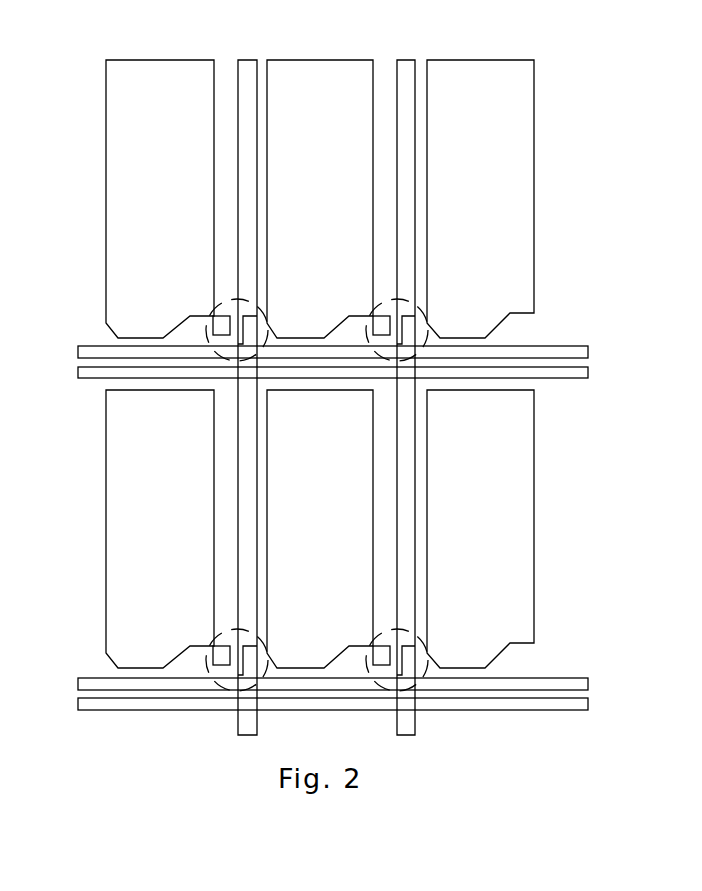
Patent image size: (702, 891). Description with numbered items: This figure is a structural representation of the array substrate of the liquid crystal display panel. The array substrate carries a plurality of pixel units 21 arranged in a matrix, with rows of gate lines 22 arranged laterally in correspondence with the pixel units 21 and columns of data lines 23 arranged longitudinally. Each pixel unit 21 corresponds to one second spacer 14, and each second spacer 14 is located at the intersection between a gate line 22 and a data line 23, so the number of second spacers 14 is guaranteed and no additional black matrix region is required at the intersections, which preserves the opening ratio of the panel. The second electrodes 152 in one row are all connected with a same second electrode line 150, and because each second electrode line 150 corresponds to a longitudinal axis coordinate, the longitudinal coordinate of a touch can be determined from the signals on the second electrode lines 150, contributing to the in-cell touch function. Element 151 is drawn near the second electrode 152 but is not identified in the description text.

The second spacer 14 is at (423, 318).
The pixel unit 21 is at (133, 180).
The gate line 22 is at (108, 372).
The data line 23 is at (248, 78).
The second electrode line 150 is at (93, 353).
The source electrode contact 151 is at (218, 323).
The second electrode 152 is at (253, 325).